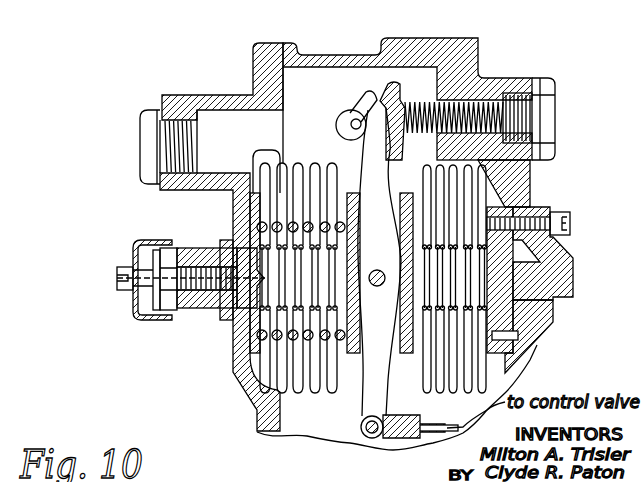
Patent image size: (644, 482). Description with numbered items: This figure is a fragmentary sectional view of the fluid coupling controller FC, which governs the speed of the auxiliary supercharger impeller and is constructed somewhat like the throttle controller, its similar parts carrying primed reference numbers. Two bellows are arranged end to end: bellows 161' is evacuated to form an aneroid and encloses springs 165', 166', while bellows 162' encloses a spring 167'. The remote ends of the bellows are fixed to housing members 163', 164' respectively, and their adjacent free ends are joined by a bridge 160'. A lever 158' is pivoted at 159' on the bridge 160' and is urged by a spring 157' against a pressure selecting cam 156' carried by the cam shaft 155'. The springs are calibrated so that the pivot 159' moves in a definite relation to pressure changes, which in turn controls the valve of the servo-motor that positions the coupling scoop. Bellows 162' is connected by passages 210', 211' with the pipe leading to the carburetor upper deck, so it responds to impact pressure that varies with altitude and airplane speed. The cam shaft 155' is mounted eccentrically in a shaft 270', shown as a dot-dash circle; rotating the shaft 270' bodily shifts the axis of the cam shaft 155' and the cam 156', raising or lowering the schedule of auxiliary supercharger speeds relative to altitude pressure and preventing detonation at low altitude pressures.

The housing member 164' is at (407, 55).
The spring 157' is at (467, 93).
The pressure selecting cam 156' is at (358, 98).
The lever 158' is at (377, 256).
The cam shaft 155' is at (333, 121).
The roller pin 270' is at (341, 139).
The bellows 161' is at (298, 262).
The spring 166' is at (316, 253).
The bellows 162' is at (444, 267).
The bridge 160' is at (403, 266).
The spring 165' is at (221, 273).
The housing member 163' is at (198, 302).
The spring 167' is at (546, 240).
The passage 210' is at (568, 253).
The passage 211' is at (567, 334).
The pivot 159' is at (372, 262).